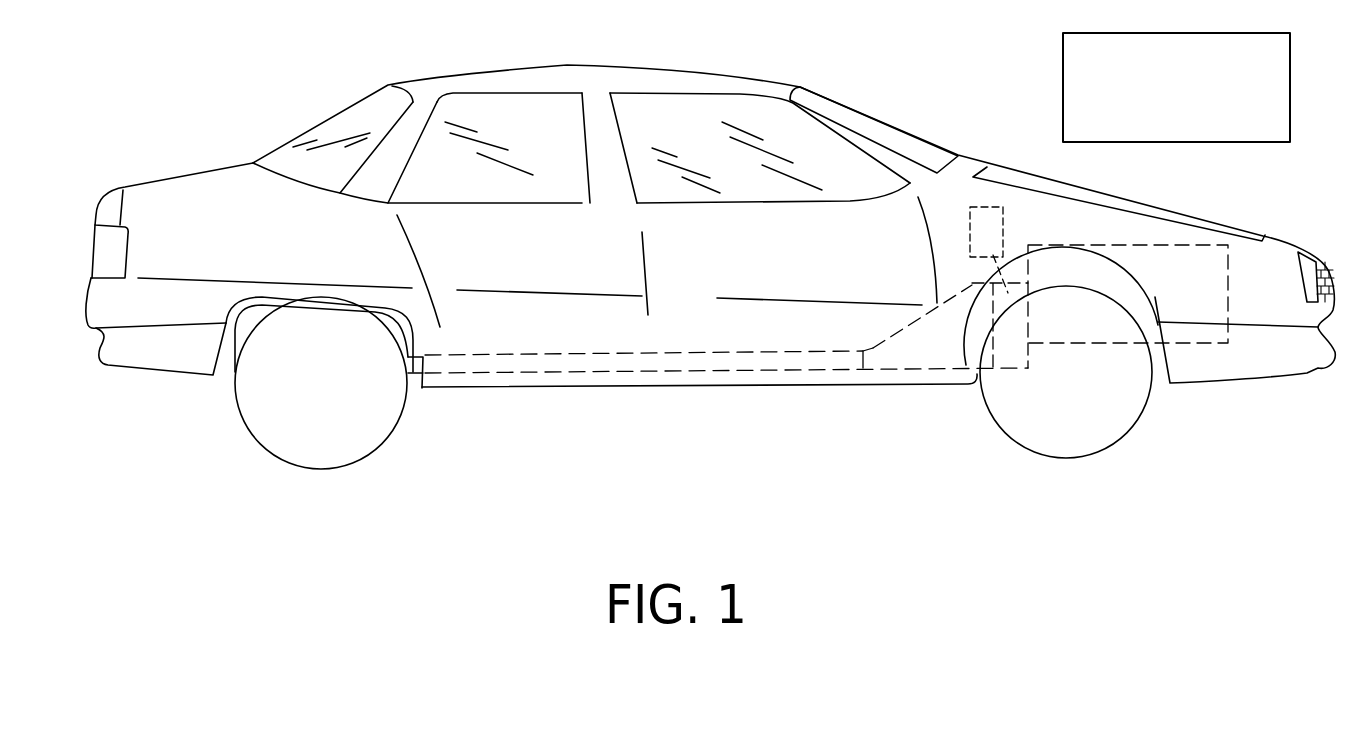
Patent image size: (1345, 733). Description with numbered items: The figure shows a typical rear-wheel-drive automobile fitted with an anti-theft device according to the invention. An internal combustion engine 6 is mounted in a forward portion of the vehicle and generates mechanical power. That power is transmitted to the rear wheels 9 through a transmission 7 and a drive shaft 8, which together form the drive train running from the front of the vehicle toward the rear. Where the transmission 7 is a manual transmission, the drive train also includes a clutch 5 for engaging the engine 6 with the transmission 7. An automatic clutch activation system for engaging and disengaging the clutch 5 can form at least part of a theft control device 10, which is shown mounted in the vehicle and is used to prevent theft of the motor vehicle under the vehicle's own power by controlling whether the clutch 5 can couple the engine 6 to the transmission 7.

The clutch 5 is at (1012, 350).
The internal combustion engine 6 is at (1157, 297).
The transmission 7 is at (927, 353).
The drive shaft 8 is at (650, 373).
The rear wheels 9 is at (345, 438).
The theft control device 10 is at (995, 210).